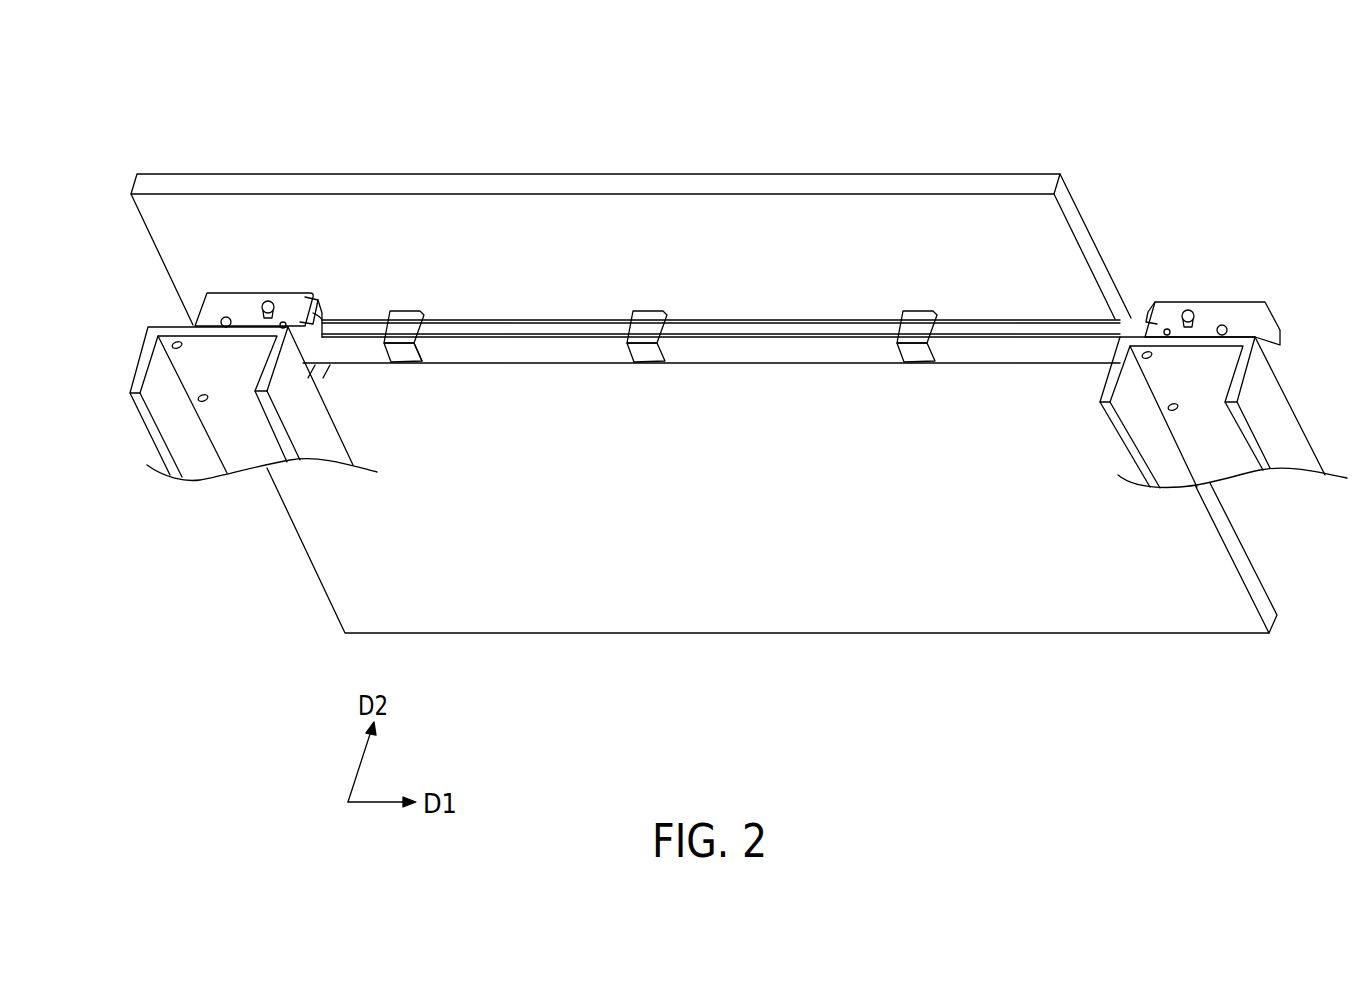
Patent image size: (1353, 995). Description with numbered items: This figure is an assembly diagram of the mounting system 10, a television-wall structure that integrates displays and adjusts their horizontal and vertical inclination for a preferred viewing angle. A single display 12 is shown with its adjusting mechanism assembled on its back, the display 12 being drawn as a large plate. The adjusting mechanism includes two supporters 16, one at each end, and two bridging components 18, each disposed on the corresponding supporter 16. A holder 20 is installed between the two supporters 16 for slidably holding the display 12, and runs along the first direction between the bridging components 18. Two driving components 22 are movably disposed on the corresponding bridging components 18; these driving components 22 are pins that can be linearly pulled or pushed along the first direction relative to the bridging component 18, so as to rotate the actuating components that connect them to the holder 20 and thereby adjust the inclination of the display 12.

The mounting system 10 is at (1211, 138).
The display 12 is at (1065, 194).
The supporter 16 is at (160, 413).
The bridging component 18 is at (237, 303).
The holder 20 is at (564, 332).
The driving component 22 is at (222, 321).